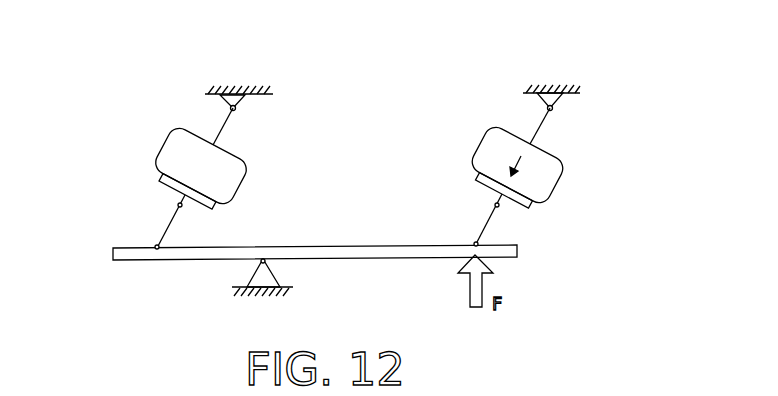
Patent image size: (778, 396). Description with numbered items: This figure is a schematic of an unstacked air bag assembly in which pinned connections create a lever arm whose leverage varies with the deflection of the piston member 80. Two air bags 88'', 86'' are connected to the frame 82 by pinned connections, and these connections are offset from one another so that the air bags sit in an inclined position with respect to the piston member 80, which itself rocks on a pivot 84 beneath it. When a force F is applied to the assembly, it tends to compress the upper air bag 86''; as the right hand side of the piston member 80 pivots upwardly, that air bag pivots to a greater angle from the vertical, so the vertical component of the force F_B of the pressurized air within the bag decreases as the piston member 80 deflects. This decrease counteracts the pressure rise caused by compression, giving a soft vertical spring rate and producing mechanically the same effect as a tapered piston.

The piston member 80 is at (508, 251).
The frame 82 is at (246, 85).
The fulcrum pivot 84 is at (266, 262).
The upper air bag 86'' is at (493, 177).
The air bag 88'' is at (175, 178).